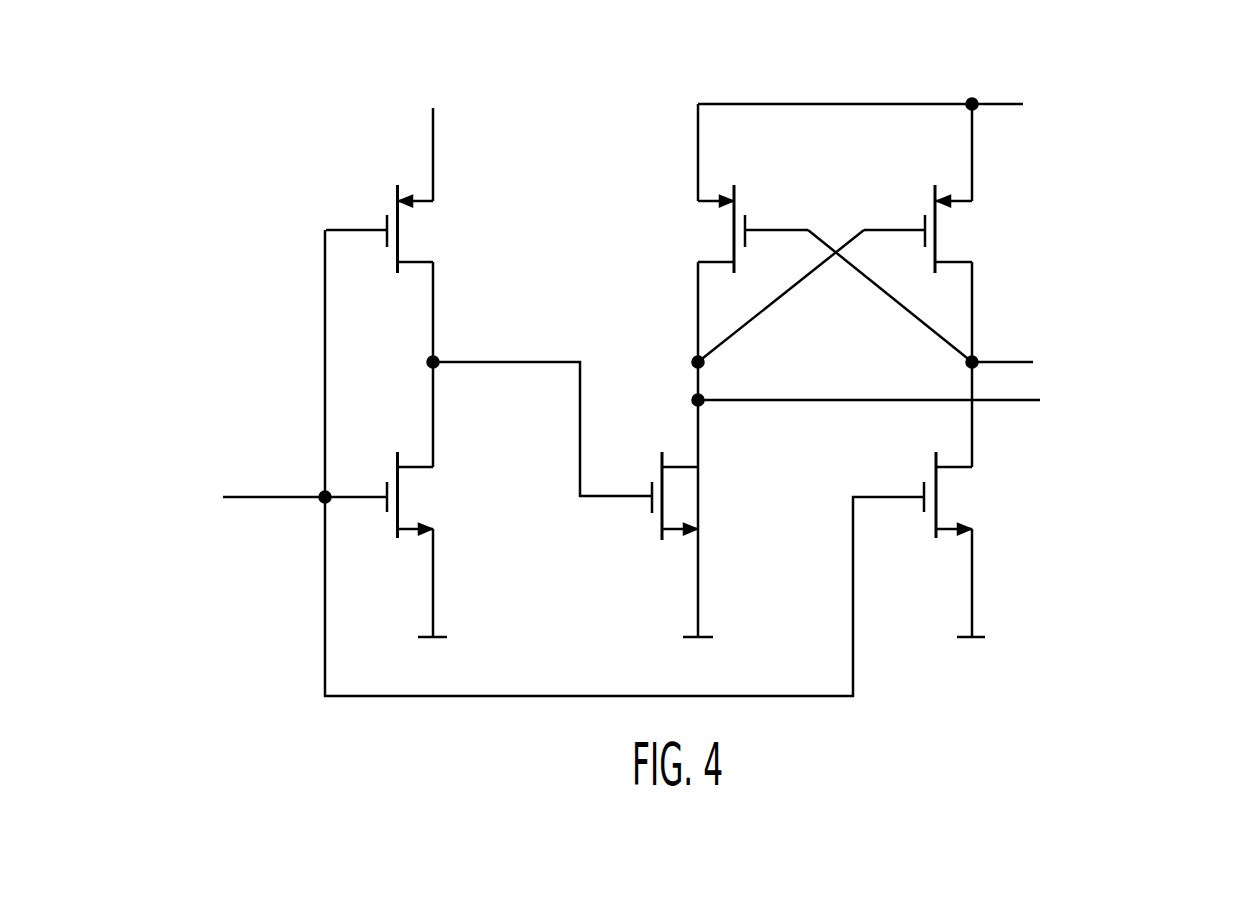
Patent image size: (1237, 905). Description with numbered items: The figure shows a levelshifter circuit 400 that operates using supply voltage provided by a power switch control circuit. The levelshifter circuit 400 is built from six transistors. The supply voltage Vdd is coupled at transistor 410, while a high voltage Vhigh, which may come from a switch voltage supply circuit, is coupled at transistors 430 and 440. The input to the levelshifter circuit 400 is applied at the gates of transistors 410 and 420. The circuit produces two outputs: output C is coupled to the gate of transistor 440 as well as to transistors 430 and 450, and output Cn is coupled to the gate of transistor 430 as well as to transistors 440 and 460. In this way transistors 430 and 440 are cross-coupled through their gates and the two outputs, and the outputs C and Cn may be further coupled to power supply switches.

The levelshifter circuit 400 is at (1160, 132).
The transistor 410 is at (448, 177).
The transistor 420 is at (448, 484).
The transistor 430 is at (757, 204).
The transistor 440 is at (987, 194).
The transistor 450 is at (718, 460).
The transistor 460 is at (989, 481).